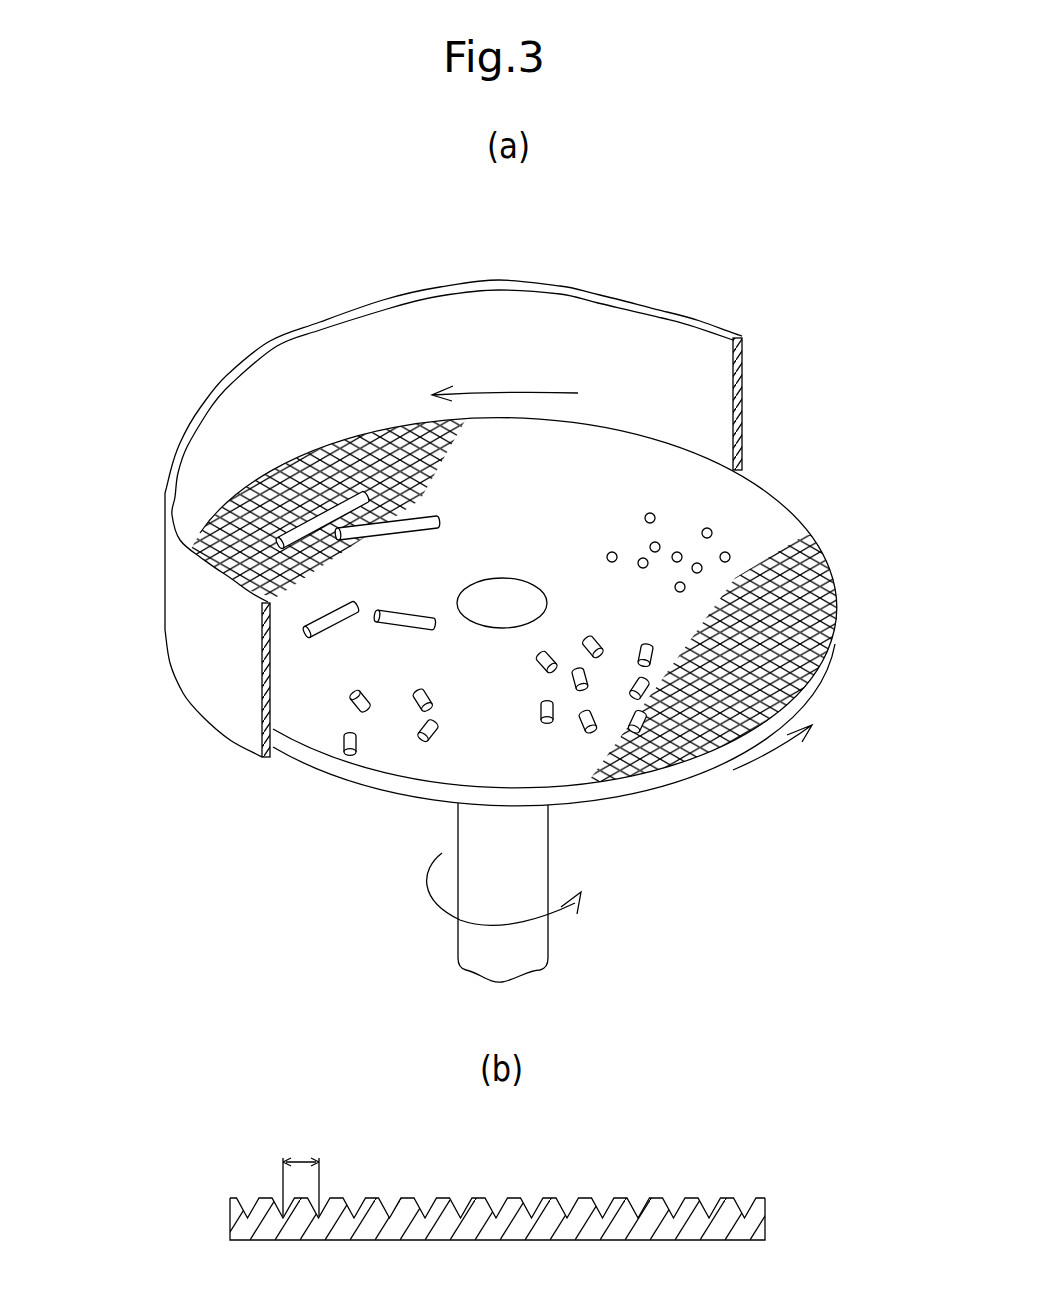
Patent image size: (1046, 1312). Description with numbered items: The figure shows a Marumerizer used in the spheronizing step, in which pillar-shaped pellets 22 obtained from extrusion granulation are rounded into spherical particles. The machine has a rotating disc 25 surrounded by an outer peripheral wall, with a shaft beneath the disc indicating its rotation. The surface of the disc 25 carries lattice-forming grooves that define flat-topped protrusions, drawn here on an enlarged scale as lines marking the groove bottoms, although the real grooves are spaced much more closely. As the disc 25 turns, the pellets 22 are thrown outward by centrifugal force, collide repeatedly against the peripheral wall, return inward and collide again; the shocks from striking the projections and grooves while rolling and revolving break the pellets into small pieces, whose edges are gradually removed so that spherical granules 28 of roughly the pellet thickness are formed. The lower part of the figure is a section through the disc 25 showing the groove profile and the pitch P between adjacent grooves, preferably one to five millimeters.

The pellets 22 is at (350, 500).
The rotating disc 25 is at (672, 770).
The spherical granules 28 is at (712, 530).
The pitch P is at (301, 1171).